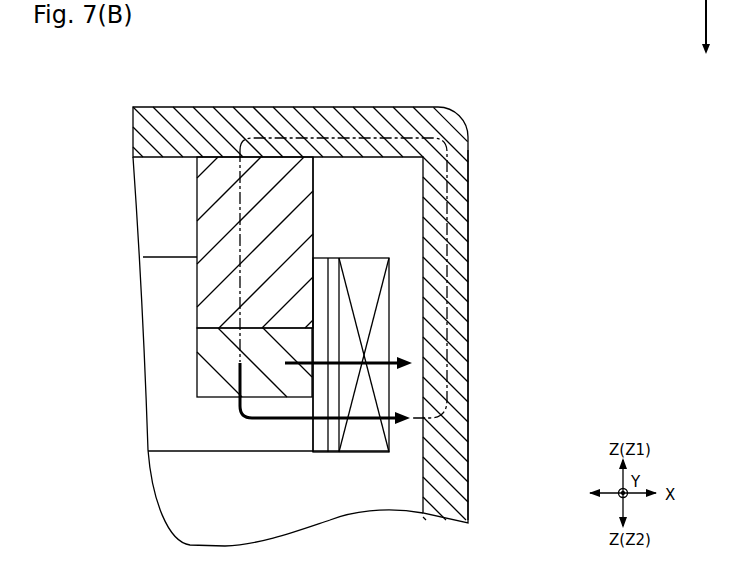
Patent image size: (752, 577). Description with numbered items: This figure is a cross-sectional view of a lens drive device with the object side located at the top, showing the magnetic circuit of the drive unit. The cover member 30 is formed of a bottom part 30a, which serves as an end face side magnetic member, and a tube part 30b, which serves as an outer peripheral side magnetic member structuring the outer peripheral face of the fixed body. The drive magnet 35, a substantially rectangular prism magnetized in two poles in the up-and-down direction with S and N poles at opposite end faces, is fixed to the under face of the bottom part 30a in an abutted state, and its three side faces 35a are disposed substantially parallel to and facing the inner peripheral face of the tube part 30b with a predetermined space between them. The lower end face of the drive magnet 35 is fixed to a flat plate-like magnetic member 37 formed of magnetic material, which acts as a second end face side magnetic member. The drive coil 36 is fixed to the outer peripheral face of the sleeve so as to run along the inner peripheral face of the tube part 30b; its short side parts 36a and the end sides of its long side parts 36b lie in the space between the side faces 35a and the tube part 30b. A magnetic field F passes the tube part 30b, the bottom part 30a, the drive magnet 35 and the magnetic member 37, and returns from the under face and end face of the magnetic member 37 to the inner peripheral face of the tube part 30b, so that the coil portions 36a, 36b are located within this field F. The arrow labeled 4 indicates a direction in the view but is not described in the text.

The cover member 30 is at (332, 292).
The bottom part 30a is at (303, 106).
The tube part 30b is at (468, 190).
The movable body 4 is at (404, 236).
The drive magnet 35 is at (295, 243).
The side faces 35a is at (314, 205).
The drive coil 36 is at (435, 355).
The short side parts 36a is at (390, 326).
The long side parts 36b is at (169, 256).
The magnetic member 37 is at (197, 355).
The magnetic field F is at (316, 398).